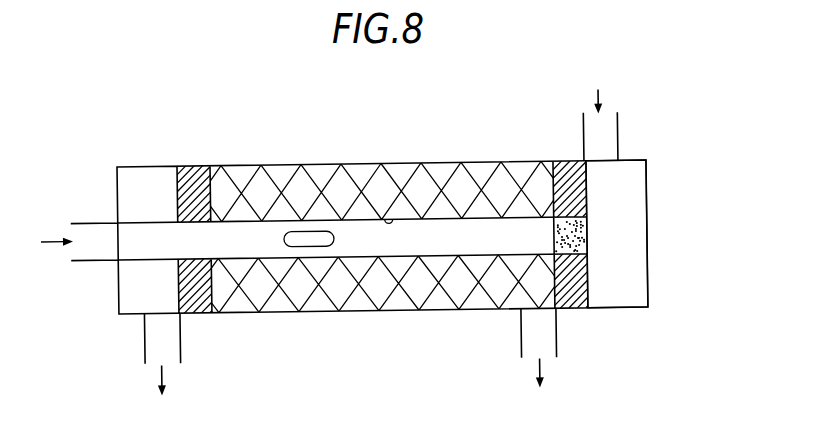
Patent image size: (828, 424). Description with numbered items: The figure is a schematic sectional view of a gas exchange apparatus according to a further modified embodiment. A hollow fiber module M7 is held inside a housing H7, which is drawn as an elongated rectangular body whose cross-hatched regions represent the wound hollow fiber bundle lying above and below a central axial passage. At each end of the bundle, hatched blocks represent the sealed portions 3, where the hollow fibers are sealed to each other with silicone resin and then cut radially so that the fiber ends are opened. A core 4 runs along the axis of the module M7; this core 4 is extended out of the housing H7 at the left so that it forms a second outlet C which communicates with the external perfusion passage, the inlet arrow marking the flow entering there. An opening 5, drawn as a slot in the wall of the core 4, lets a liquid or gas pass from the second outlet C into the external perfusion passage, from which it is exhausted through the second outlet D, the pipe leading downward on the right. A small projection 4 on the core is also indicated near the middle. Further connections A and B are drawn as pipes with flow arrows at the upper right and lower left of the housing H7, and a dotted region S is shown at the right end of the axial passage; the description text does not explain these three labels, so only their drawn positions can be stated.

The sealed portion 3 is at (200, 307).
The core 4 is at (388, 225).
The opening 5 is at (323, 234).
The inlet pipe A is at (618, 147).
The outlet pipe B is at (180, 333).
The second outlet C is at (92, 222).
The second outlet D is at (555, 333).
The sample S is at (552, 224).
The housing H7 is at (337, 318).
The hollow fiber module M7 is at (596, 271).